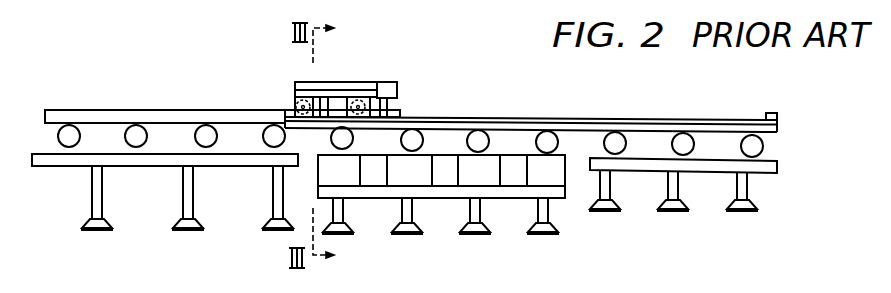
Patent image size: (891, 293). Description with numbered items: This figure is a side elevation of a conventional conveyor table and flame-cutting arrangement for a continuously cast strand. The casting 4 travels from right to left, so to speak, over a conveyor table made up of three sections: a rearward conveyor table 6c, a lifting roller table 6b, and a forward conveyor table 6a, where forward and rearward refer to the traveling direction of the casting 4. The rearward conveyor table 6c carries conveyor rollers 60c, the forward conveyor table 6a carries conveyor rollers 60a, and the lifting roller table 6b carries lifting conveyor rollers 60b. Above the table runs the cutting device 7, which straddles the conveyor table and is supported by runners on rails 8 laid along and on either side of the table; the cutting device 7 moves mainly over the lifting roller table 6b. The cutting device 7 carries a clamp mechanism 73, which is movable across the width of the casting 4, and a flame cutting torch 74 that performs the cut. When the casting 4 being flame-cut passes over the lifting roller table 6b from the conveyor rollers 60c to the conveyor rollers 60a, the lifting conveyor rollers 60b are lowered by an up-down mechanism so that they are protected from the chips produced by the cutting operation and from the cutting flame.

The casting 4 is at (147, 115).
The conveyor rollers 60c is at (206, 128).
The rearward conveyor table 6c is at (55, 163).
The rails 8 is at (506, 118).
The cutting device 7 is at (355, 73).
The clamp mechanism 73 is at (333, 82).
The flame cutting torch 74 is at (391, 83).
The lifting conveyor rollers 60b is at (413, 131).
The conveyor rollers 60a is at (615, 134).
The lifting roller table 6b is at (507, 201).
The forward conveyor table 6a is at (712, 174).